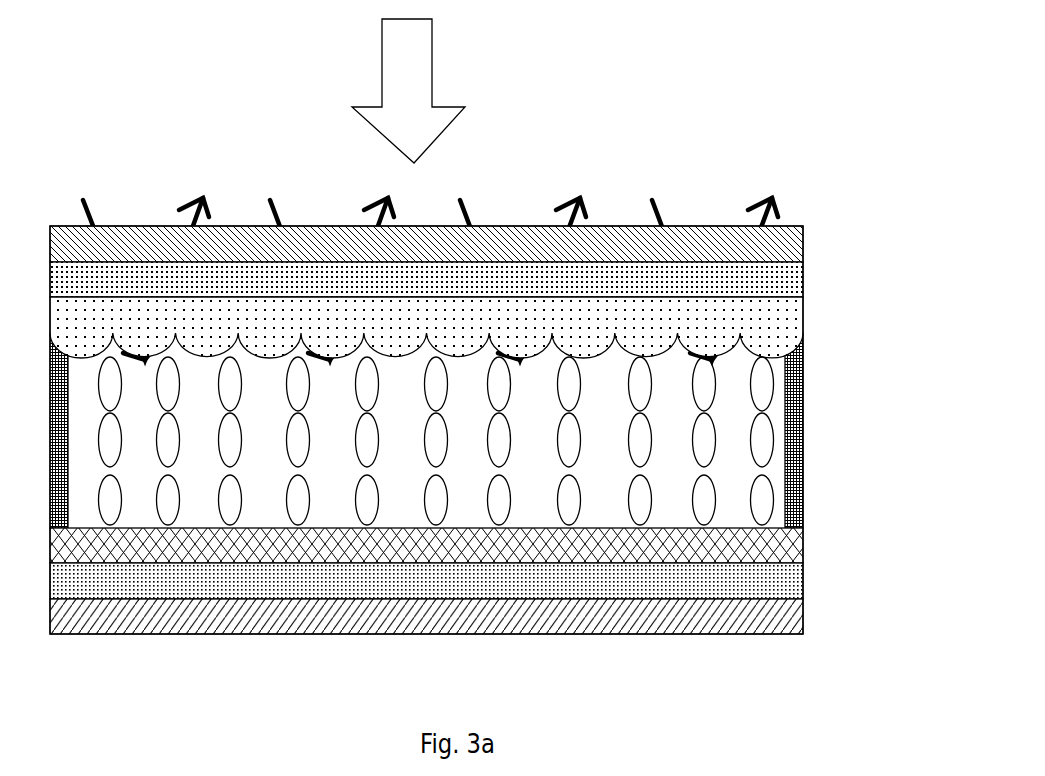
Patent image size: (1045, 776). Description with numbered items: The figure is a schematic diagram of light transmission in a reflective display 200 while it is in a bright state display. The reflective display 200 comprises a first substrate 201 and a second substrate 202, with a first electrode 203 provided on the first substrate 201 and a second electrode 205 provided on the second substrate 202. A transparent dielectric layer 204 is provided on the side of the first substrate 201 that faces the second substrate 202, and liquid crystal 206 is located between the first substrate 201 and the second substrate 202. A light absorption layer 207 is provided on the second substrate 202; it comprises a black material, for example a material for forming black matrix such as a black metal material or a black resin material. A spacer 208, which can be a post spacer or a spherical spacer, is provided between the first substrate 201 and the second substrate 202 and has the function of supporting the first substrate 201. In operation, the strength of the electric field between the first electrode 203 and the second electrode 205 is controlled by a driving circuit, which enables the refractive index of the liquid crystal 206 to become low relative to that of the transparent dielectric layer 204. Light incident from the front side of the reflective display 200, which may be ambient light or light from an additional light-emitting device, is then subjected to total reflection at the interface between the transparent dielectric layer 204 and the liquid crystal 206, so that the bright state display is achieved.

The reflective display 200 is at (484, 445).
The first substrate 201 is at (795, 238).
The second substrate 202 is at (760, 618).
The first electrode 203 is at (767, 287).
The transparent dielectric layer 204 is at (767, 333).
The second electrode 205 is at (770, 572).
The liquid crystal 206 is at (760, 443).
The light absorption layer 207 is at (767, 537).
The spacer 208 is at (803, 487).